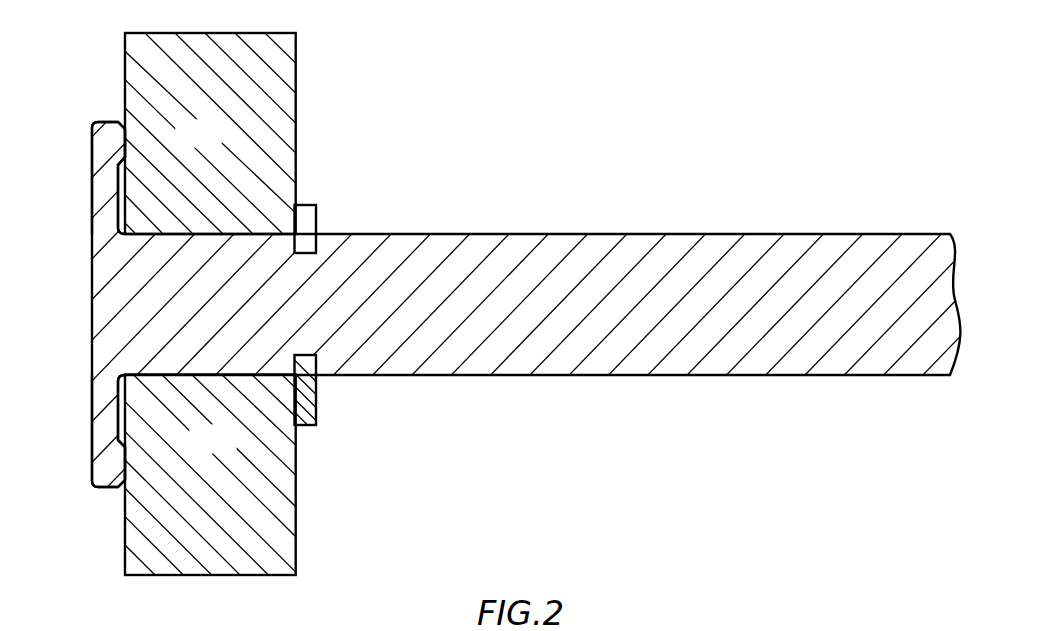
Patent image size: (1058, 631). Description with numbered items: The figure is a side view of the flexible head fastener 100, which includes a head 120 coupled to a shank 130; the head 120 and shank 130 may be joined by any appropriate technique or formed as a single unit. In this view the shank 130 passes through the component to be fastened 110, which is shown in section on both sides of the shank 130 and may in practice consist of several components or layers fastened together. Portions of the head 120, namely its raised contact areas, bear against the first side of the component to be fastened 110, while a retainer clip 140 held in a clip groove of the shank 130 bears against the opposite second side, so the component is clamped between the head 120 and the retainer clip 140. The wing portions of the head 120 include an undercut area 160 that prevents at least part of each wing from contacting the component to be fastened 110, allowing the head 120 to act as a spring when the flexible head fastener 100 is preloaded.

The flexible head fastener 100 is at (836, 78).
The component to be fastened 110 is at (217, 562).
The head 120 is at (100, 462).
The shank 130 is at (555, 362).
The retainer clip 140 is at (305, 412).
The undercut area 160 is at (118, 206).